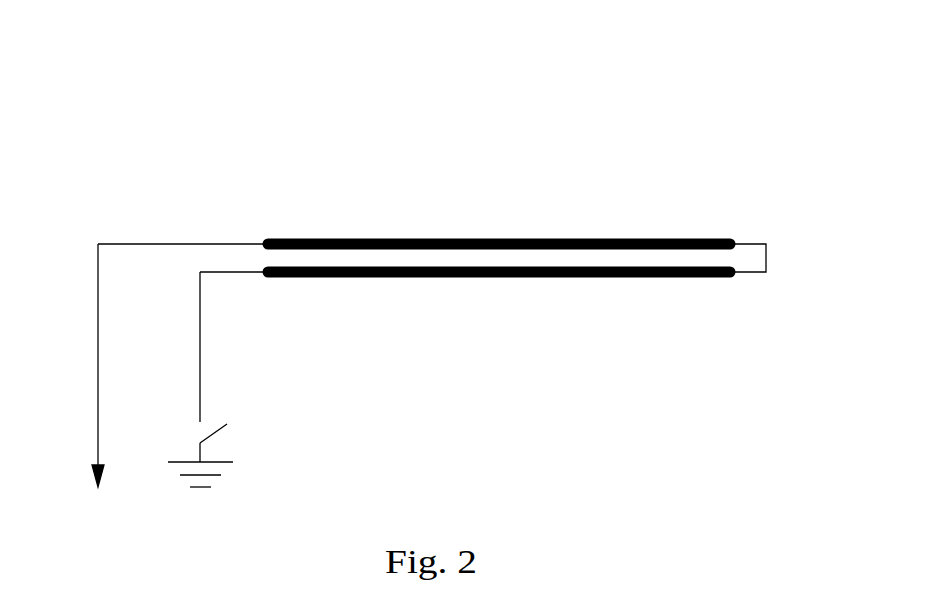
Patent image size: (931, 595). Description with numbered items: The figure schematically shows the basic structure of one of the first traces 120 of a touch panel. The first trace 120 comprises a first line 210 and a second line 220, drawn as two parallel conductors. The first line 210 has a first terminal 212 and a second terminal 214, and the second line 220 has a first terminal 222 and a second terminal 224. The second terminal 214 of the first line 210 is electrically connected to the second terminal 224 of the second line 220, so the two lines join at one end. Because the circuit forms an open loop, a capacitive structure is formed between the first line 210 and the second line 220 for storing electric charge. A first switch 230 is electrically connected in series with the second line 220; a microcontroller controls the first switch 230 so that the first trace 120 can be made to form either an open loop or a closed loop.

The first trace 120 is at (789, 481).
The first line 210 is at (500, 238).
The first terminal 212 is at (270, 239).
The second terminal 214 is at (730, 239).
The second line 220 is at (500, 279).
The first terminal 222 is at (270, 279).
The second terminal 224 is at (730, 279).
The first switch 230 is at (227, 439).